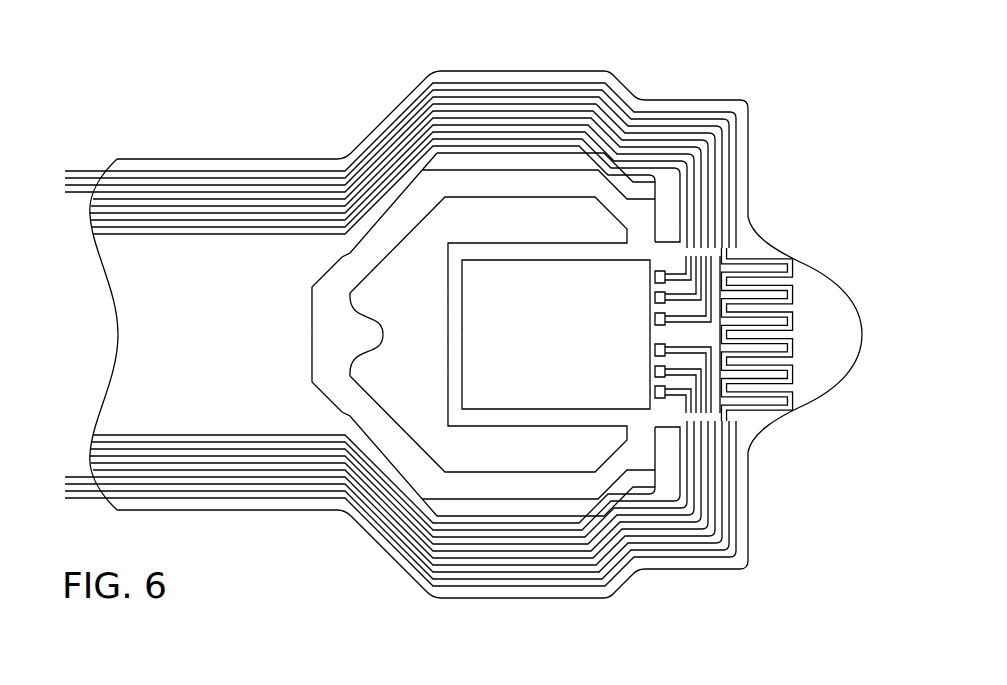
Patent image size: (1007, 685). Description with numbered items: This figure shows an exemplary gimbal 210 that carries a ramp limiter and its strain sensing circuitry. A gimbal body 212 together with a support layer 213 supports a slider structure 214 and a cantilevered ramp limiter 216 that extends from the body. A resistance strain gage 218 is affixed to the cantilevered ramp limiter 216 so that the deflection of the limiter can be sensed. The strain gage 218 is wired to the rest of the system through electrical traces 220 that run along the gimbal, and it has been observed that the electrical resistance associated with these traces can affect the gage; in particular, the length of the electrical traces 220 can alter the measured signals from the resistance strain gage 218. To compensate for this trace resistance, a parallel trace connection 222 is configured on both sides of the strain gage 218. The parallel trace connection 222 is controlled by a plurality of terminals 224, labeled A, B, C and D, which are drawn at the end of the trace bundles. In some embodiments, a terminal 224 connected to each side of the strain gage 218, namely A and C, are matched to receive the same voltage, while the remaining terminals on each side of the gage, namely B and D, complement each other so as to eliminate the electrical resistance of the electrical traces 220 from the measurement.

The gimbal 210 is at (175, 66).
The gimbal body 212 is at (445, 315).
The support layer 213 is at (600, 505).
The slider structure 214 is at (522, 412).
The cantilevered ramp limiter 216 is at (832, 416).
The resistance strain gage 218 is at (805, 326).
The electrical traces 220 is at (211, 170).
The parallel trace connection 222 is at (747, 252).
The terminals 224 is at (78, 163).